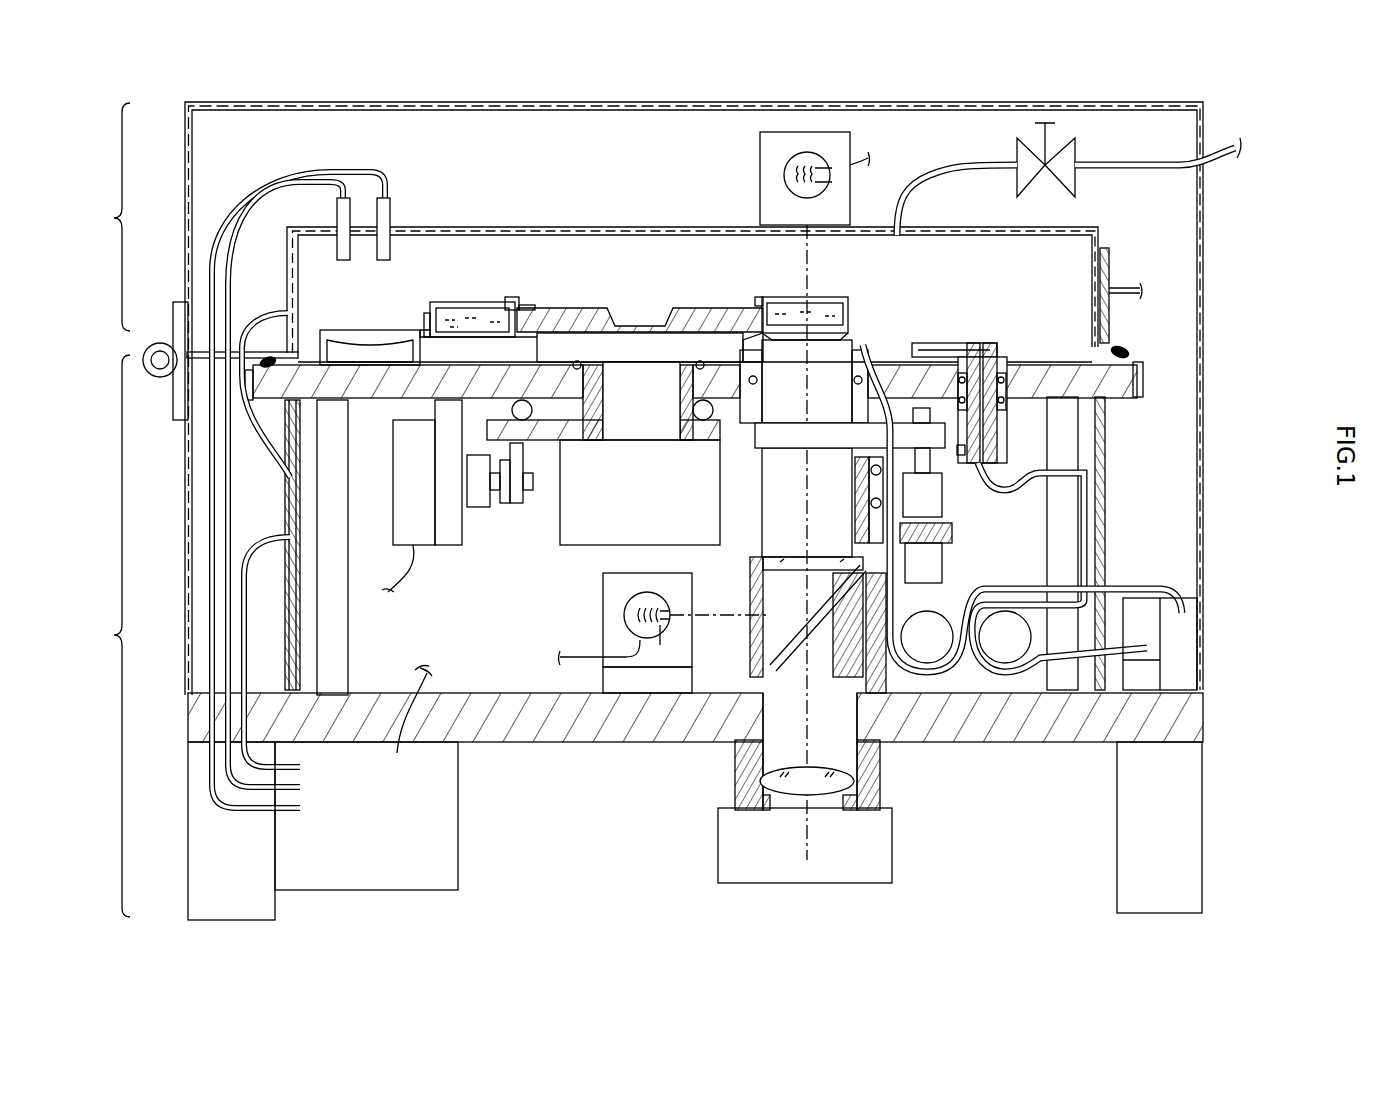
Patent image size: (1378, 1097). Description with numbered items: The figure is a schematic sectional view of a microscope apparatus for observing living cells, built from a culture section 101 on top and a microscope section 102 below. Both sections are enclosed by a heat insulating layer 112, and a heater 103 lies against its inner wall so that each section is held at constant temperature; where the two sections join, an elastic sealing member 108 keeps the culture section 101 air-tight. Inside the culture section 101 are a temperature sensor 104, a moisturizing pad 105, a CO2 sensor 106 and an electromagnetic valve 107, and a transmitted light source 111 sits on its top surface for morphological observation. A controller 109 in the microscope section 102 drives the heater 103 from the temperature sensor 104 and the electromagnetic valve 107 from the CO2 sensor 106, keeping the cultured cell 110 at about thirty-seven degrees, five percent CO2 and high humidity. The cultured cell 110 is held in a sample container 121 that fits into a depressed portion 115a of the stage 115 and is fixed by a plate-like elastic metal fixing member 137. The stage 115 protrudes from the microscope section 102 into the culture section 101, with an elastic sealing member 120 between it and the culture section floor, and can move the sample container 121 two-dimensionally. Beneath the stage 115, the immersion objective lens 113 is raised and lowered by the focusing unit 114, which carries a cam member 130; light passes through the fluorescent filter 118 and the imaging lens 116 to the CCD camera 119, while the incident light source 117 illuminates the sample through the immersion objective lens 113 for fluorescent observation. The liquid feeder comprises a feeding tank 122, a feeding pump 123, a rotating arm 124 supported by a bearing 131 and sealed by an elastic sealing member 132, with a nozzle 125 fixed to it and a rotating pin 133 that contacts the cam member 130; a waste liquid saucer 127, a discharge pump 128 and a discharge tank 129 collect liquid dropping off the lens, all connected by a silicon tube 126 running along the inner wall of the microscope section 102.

The culture section 101 is at (581, 232).
The microscope section 102 is at (634, 637).
The heater 103 is at (1110, 255).
The temperature sensor 104 is at (340, 260).
The moisturizing pad 105 is at (396, 330).
The CO2 sensor 106 is at (392, 210).
The electromagnetic valve 107 is at (1075, 180).
The elastic sealing member 108 is at (1130, 350).
The controller 109 is at (458, 790).
The cultured cell 110 is at (782, 378).
The transmitted light source 111 is at (760, 150).
The heat insulating layer 112 is at (1107, 116).
The immersion objective lens 113 is at (740, 345).
The focusing unit 114 is at (778, 449).
The stage 115 is at (590, 308).
The depressed portion 115a is at (530, 305).
The imaging lens 116 is at (760, 785).
The incident light source 117 is at (603, 595).
The fluorescent filter 118 is at (770, 637).
The CCD camera 119 is at (720, 865).
The elastic sealing member 120 is at (577, 362).
The sample container 121 is at (455, 302).
The feeding tank 122 is at (1147, 673).
The feeding pump 123 is at (1005, 664).
The rotating arm 124 is at (1088, 473).
The nozzle 125 is at (1000, 360).
The tube 126 is at (1000, 585).
The waste liquid saucer 127 is at (862, 345).
The discharge pump 128 is at (925, 664).
The discharge tank 129 is at (1180, 632).
The cam member 130 is at (953, 430).
The bearing 131 is at (1010, 397).
The elastic sealing member 132 is at (960, 355).
The rotating pin 133 is at (962, 455).
The elastic metal fixing member 137 is at (510, 297).